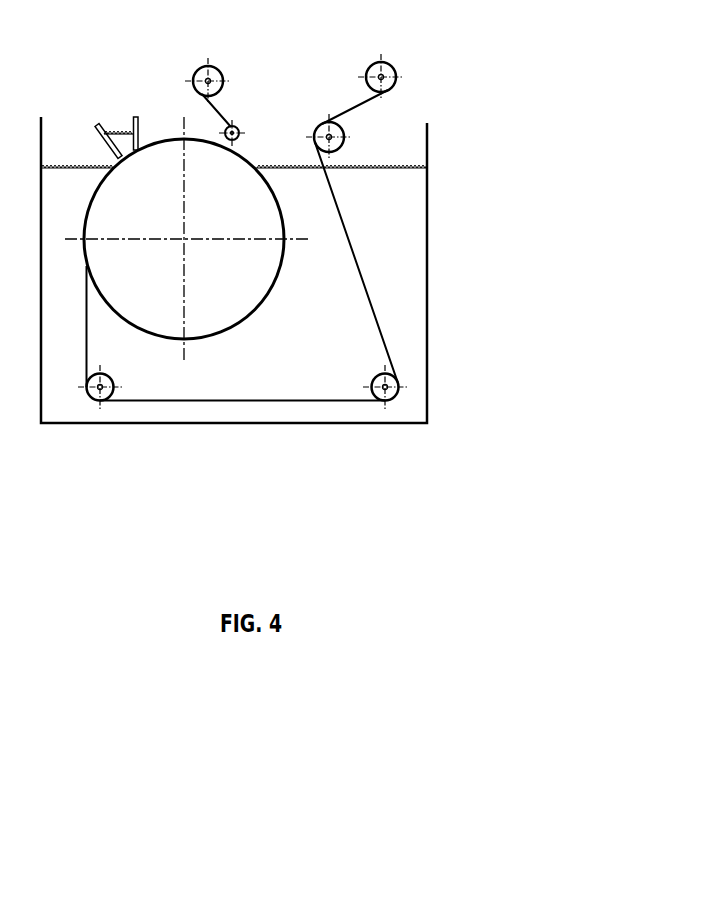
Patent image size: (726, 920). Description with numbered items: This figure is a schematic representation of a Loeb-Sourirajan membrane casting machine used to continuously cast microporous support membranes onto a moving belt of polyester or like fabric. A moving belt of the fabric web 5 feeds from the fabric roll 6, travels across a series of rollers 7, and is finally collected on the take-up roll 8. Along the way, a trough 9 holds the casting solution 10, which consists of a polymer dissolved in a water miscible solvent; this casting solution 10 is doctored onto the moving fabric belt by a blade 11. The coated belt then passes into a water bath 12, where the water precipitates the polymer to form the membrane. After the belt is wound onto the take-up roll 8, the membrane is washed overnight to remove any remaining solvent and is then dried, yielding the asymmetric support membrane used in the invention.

The fabric web 5 is at (352, 102).
The fabric roll 6 is at (218, 65).
The rollers 7 is at (241, 123).
The take-up roll 8 is at (395, 60).
The trough 9 is at (138, 115).
The casting solution 10 is at (120, 125).
The blade 11 is at (92, 135).
The water bath 12 is at (403, 289).